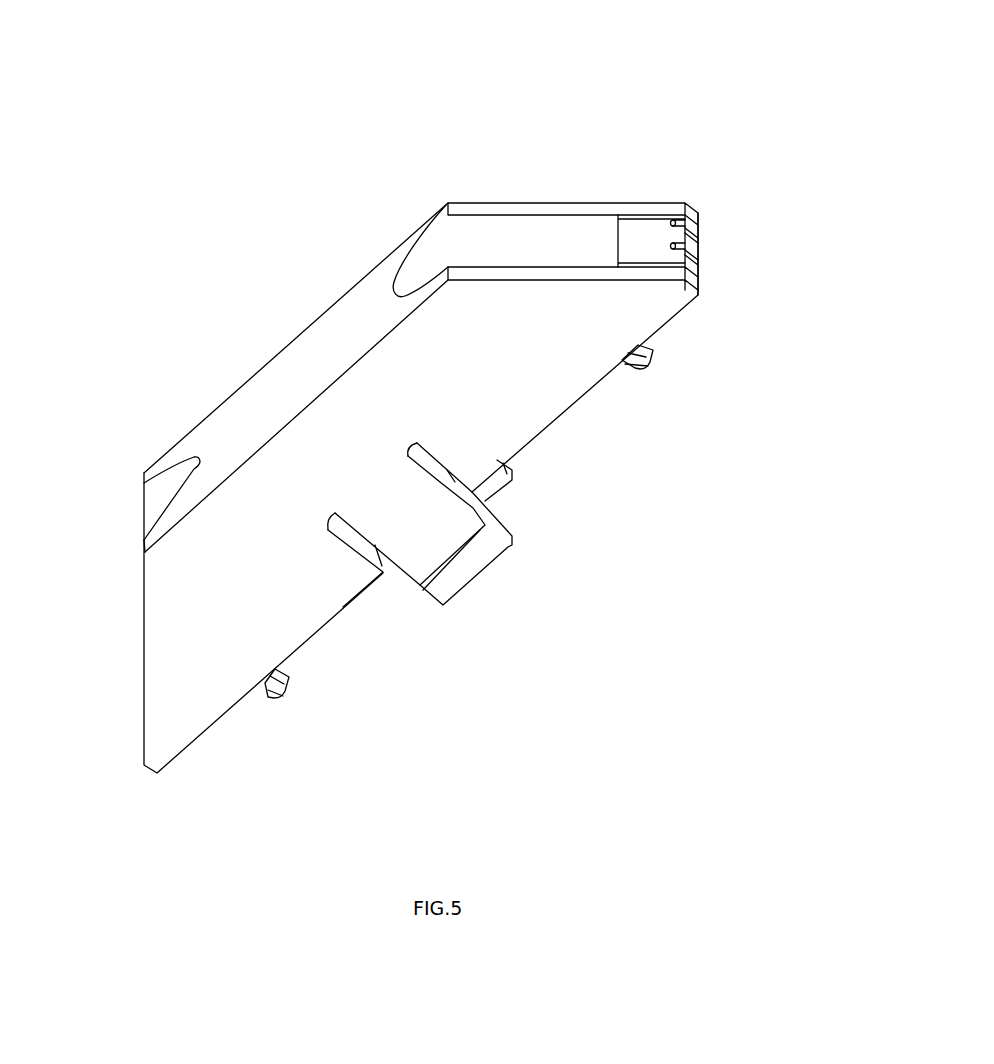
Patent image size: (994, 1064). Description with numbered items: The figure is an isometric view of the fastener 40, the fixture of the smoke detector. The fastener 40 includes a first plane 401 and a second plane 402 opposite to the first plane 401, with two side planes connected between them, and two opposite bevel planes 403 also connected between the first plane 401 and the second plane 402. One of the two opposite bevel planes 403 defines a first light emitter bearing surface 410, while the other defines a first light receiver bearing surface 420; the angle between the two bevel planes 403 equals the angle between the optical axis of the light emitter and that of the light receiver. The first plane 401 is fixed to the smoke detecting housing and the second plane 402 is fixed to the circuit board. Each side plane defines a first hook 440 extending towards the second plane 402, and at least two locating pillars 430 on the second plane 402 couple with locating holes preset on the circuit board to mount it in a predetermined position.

The fastener 40 is at (400, 27).
The first plane 401 is at (322, 353).
The second plane 402 is at (542, 428).
The bevel planes 403 is at (602, 200).
The first light emitter bearing surface 410 is at (492, 242).
The first light receiver bearing surface 420 is at (157, 502).
The locating pillars 430 is at (637, 368).
The first hook 440 is at (472, 557).